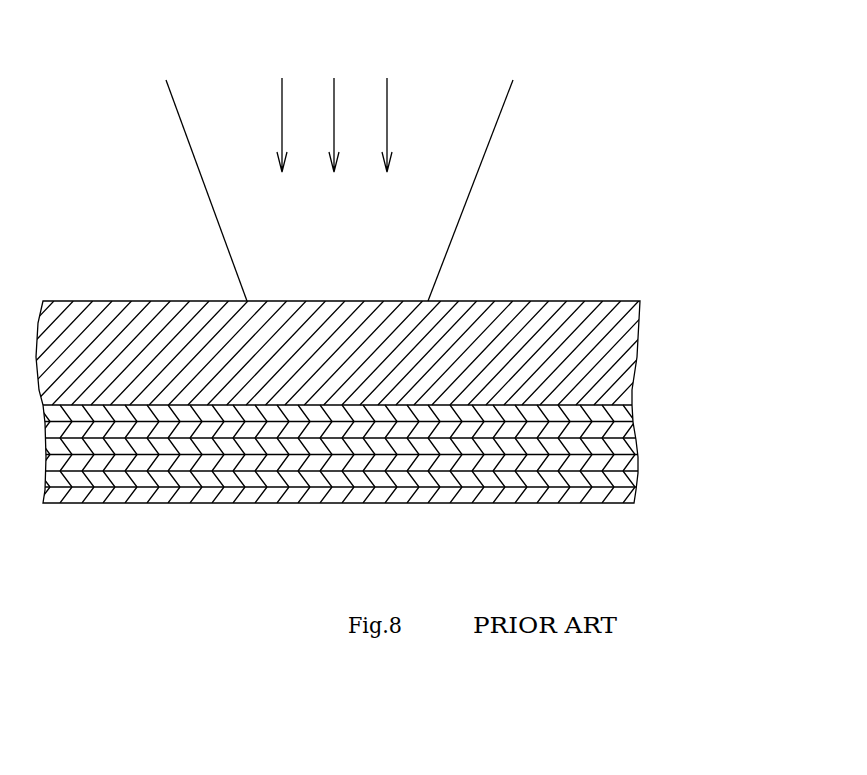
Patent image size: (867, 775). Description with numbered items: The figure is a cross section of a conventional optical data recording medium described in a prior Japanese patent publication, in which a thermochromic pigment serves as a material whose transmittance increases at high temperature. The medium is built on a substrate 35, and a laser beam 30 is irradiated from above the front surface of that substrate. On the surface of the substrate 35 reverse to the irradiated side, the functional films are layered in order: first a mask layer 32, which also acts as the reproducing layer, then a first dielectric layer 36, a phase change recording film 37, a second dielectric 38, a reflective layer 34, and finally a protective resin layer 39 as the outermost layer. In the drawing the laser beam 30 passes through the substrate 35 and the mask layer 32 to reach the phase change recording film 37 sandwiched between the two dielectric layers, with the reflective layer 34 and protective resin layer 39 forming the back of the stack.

The laser beam 30 is at (387, 127).
The substrate 35 is at (627, 357).
The mask layer 32 is at (630, 408).
The first dielectric layer 36 is at (630, 420).
The phase change recording film 37 is at (630, 445).
The second dielectric 38 is at (630, 468).
The reflective layer 34 is at (632, 482).
The protective resin layer 39 is at (632, 503).